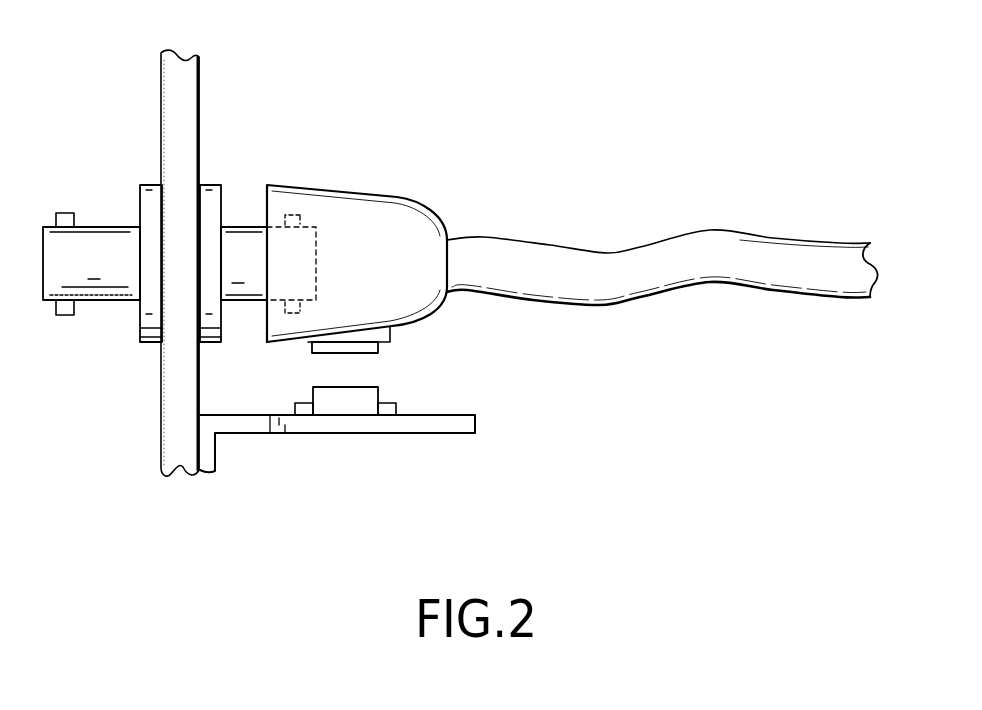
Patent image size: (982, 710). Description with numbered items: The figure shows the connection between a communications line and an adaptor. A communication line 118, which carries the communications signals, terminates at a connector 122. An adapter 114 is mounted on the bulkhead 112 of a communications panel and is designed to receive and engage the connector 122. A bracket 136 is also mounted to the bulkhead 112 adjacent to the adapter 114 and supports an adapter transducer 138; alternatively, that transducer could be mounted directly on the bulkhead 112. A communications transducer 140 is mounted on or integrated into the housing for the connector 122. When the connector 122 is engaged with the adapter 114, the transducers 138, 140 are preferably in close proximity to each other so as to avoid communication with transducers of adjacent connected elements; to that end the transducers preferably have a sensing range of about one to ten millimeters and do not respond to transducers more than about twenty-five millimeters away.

The bulkhead 112 is at (199, 97).
The adapter 114 is at (233, 227).
The communication line 118 is at (627, 303).
The connector 122 is at (413, 202).
The bracket 136 is at (393, 433).
The adapter transducer 138 is at (380, 402).
The communications transducer 140 is at (378, 352).